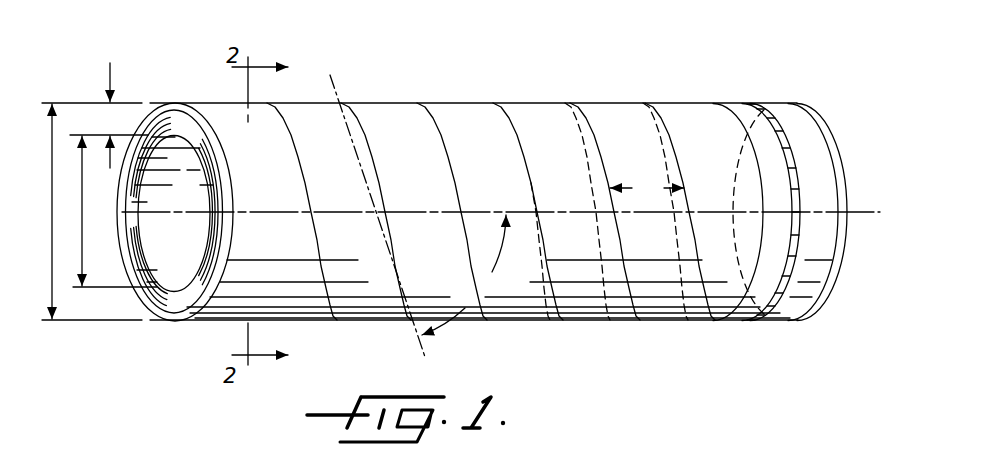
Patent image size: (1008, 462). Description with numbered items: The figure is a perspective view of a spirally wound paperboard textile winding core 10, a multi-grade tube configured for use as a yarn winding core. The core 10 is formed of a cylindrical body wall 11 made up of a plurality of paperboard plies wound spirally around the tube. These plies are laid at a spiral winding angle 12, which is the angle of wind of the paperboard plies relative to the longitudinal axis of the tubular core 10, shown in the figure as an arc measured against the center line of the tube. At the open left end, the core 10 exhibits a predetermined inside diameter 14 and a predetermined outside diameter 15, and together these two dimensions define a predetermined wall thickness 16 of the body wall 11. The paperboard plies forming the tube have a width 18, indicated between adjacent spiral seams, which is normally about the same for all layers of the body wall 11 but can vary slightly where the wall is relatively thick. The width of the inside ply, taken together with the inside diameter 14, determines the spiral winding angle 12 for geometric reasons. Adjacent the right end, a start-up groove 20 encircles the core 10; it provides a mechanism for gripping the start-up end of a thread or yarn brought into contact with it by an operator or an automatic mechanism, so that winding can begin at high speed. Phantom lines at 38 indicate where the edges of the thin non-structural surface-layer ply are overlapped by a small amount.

The spirally wound paperboard textile winding core 10 is at (505, 72).
The cylindrical body wall 11 is at (172, 117).
The spiral winding angle 12 is at (418, 216).
The inside diameter 14 is at (112, 211).
The outside diameter 15 is at (92, 211).
The wall thickness 16 is at (104, 115).
The width 18 is at (647, 190).
The start-up groove 20 is at (796, 104).
The overlapped edges of surface layer ply 38 is at (600, 274).